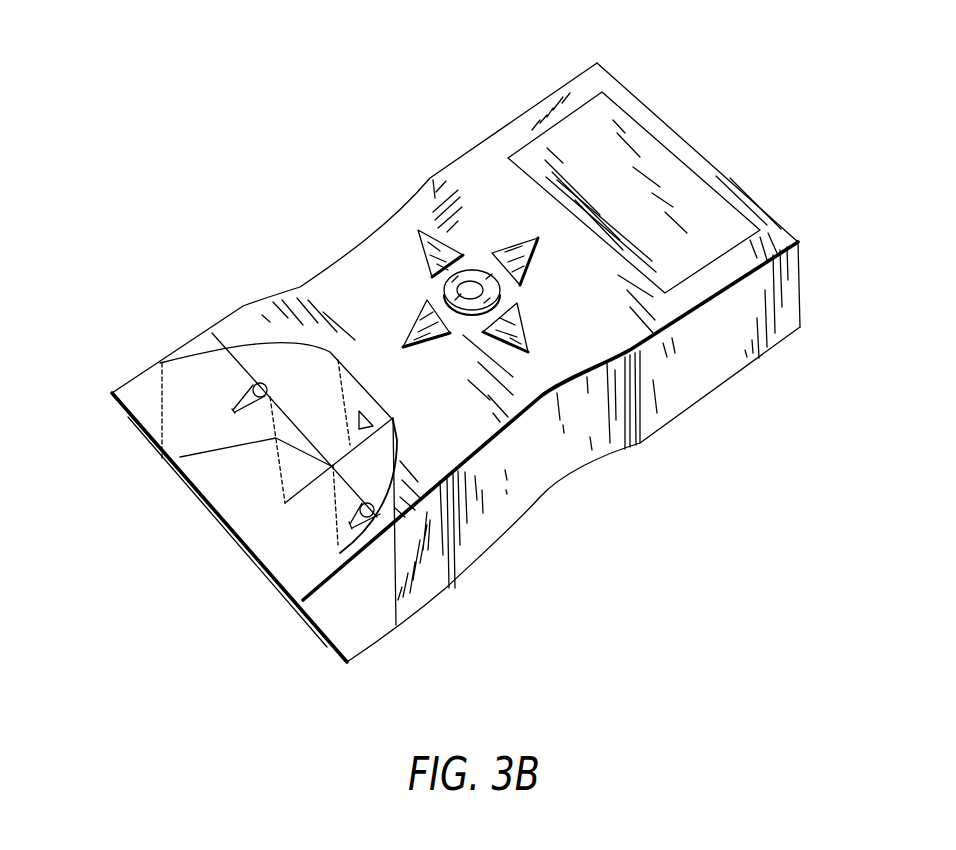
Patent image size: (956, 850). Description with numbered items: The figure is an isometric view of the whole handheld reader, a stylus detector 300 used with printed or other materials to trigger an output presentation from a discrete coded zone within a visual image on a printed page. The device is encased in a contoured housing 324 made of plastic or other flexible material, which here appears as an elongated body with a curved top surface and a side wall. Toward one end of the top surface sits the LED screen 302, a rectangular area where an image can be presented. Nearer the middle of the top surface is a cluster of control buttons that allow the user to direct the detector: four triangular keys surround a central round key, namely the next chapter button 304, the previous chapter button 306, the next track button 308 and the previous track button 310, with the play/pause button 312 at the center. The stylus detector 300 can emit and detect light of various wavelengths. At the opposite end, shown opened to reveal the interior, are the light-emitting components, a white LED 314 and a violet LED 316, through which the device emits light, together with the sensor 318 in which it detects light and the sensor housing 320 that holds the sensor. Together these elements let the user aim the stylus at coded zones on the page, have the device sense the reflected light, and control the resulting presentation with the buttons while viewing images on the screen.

The stylus detector 300 is at (673, 467).
The LED screen 302 is at (633, 187).
The next chapter button 304 is at (422, 343).
The previous chapter button 306 is at (532, 263).
The next track button 308 is at (507, 343).
The previous track button 310 is at (425, 255).
The play/pause button 312 is at (480, 268).
The white LED 314 is at (233, 410).
The violet LED 316 is at (352, 523).
The sensor 318 is at (362, 420).
The sensor housing 320 is at (348, 627).
The contoured housing 324 is at (493, 512).